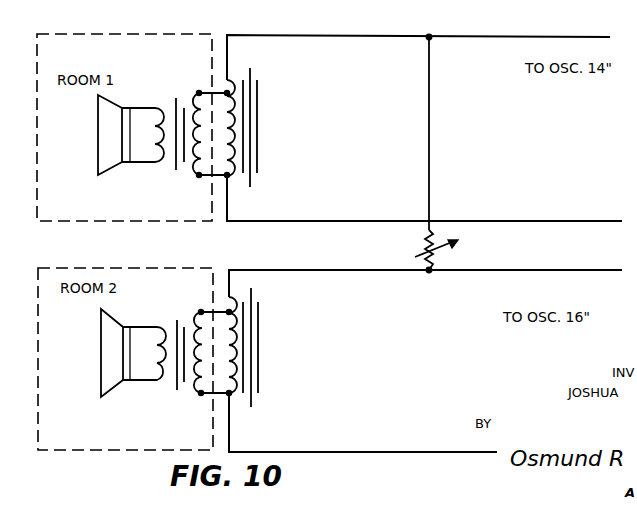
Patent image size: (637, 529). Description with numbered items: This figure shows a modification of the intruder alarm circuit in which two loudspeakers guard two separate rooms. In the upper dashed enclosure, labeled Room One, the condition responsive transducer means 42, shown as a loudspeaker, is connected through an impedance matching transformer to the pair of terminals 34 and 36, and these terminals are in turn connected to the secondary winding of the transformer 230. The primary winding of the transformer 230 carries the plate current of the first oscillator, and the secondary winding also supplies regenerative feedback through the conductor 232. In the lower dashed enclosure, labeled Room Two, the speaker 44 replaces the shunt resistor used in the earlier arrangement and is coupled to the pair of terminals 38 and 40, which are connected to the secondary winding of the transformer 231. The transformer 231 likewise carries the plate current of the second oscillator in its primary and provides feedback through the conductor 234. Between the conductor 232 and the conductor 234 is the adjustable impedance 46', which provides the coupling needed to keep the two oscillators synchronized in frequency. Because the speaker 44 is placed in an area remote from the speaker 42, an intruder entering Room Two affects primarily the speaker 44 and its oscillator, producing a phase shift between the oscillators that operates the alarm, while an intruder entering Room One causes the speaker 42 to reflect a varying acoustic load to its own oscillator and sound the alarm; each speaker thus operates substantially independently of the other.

The terminal 34 is at (199, 92).
The terminal 36 is at (199, 176).
The terminal 38 is at (199, 312).
The terminal 40 is at (201, 394).
The condition responsive transducer means 42 is at (98, 121).
The speaker 44 is at (101, 338).
The adjustable impedance 46' is at (425, 250).
The transformer 230 is at (252, 176).
The transformer 231 is at (253, 398).
The conductor 232 is at (430, 39).
The conductor 234 is at (430, 271).